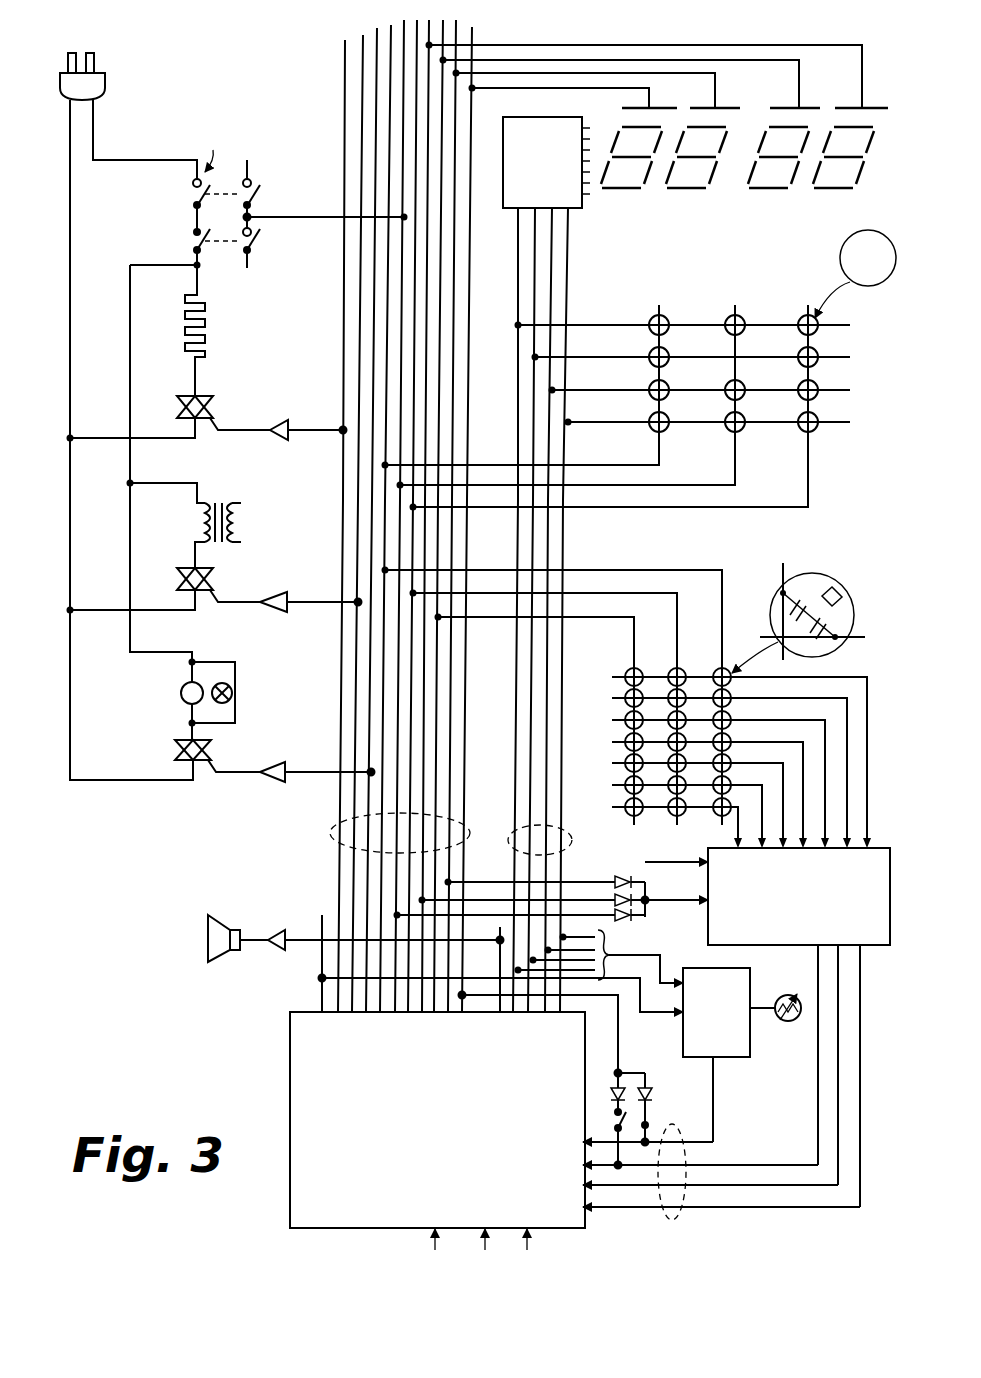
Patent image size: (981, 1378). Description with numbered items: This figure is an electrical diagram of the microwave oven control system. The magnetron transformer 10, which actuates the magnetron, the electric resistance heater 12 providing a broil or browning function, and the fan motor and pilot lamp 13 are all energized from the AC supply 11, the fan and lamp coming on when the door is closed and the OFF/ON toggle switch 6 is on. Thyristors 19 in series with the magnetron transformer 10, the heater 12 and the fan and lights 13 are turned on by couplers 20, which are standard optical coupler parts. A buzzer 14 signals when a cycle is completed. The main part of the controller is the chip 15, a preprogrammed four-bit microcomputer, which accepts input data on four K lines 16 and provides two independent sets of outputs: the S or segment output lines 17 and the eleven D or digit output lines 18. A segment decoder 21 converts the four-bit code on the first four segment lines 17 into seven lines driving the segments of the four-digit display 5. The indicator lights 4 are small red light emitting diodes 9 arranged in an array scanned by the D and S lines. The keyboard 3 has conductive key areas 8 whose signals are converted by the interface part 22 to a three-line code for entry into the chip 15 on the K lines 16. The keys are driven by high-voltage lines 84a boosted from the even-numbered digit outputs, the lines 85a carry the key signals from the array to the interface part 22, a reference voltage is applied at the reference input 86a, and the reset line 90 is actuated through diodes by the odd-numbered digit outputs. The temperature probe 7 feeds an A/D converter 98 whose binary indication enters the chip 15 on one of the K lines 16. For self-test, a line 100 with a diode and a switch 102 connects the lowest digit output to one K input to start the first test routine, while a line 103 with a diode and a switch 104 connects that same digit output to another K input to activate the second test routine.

The keyboard 3 is at (648, 692).
The indicator lights 4 is at (639, 370).
The display 5 is at (770, 192).
The OFF/ON toggle switch 6 is at (188, 242).
The temperature probe 7 is at (785, 1021).
The conductive areas 8 is at (832, 590).
The light emitting diodes 9 is at (800, 318).
The magnetron transformer 10 is at (218, 490).
The AC supply 11 is at (95, 122).
The heater 12 is at (183, 322).
The fan motor and pilot lamp 13 is at (180, 692).
The buzzer 14 is at (218, 928).
The chip 15 is at (283, 1072).
The K lines 16 is at (672, 1220).
The S output lines 17 is at (510, 835).
The D output lines 18 is at (330, 835).
The thyristors 19 is at (178, 407).
The couplers 20 is at (270, 428).
The segment decoder 21 is at (578, 200).
The interface part 22 is at (795, 945).
The drive lines 84a is at (640, 612).
The keyboard output lines 85a is at (847, 800).
The reference voltage input pin 86a is at (650, 860).
The reset line 90 is at (660, 905).
The A/D converter 98 is at (735, 1057).
The line 100 is at (618, 1062).
The switch 102 is at (606, 1098).
The line 103 is at (652, 1085).
The switch 104 is at (650, 1122).